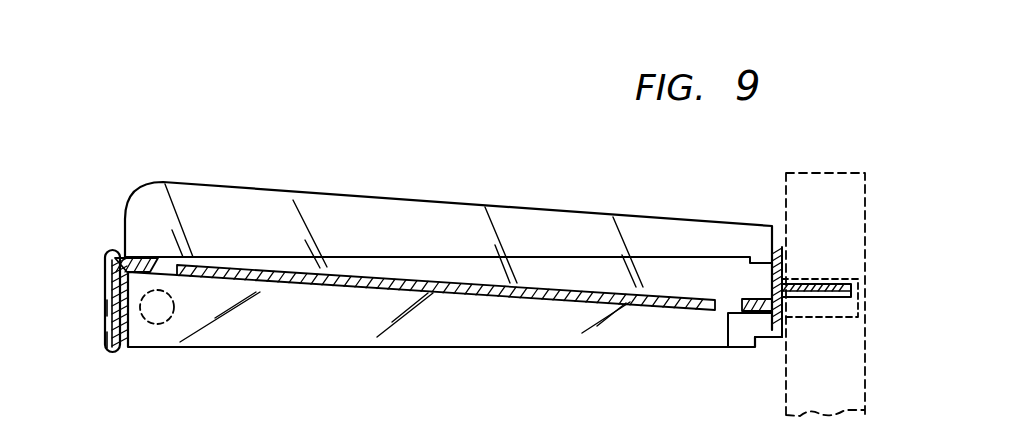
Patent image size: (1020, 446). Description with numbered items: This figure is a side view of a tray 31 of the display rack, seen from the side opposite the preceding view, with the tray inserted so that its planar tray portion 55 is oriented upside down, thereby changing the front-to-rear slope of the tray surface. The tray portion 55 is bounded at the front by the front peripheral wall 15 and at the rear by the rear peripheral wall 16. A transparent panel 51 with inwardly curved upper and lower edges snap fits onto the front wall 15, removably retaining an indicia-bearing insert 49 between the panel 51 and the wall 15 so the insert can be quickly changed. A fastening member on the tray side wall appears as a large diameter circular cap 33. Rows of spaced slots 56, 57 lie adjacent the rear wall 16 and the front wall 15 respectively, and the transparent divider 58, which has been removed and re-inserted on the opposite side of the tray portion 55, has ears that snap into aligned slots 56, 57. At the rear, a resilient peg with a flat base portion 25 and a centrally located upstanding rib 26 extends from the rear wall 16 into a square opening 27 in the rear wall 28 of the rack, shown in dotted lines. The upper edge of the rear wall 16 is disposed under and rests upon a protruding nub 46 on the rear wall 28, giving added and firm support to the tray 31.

The front peripheral wall 15 is at (107, 280).
The removable insert 49 is at (107, 308).
The transparent panel 51 is at (105, 340).
The circular cap 33 is at (168, 323).
The slot 57 is at (172, 276).
The divider 58 is at (318, 200).
The tray 31 is at (447, 188).
The tray portion 55 is at (582, 285).
The nub 46 is at (775, 247).
The rear peripheral wall 16 is at (783, 278).
The flat base portion 25 is at (834, 283).
The rear wall 28 is at (790, 172).
The opening 27 is at (838, 334).
The upstanding rib 26 is at (801, 318).
The slot 56 is at (728, 347).